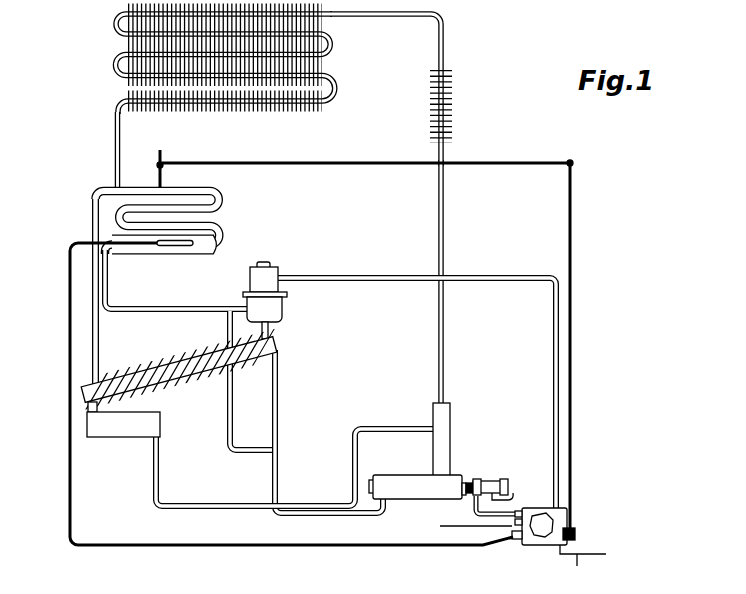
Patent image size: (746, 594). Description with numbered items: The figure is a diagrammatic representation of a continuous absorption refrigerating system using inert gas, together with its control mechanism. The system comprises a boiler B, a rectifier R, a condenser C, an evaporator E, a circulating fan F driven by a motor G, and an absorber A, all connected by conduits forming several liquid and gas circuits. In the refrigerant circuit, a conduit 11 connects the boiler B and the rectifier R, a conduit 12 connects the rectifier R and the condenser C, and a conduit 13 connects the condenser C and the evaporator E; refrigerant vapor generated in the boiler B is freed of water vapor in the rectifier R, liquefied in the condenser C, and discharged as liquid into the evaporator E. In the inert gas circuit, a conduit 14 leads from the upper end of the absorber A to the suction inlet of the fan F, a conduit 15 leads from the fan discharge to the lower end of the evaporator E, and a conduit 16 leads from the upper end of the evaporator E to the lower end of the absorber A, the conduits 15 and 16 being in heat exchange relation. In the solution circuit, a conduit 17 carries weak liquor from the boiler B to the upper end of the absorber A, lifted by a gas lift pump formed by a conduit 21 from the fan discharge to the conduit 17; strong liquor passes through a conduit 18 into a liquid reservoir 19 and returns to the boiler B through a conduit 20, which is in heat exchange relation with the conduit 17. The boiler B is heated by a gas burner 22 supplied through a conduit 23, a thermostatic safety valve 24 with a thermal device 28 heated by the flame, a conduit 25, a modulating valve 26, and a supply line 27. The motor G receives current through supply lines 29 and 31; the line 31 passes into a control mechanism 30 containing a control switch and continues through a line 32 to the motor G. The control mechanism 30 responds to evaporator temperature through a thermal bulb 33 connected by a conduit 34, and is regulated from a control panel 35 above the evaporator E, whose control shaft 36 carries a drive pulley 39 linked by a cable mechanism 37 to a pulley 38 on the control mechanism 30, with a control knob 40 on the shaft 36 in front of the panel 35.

The conduit 11 is at (445, 356).
The conduit 12 is at (443, 52).
The conduit 13 is at (113, 150).
The conduit 14 is at (269, 329).
The conduit 15 is at (104, 291).
The conduit 16 is at (91, 292).
The conduit 17 is at (333, 516).
The conduit 18 is at (88, 408).
The liquid reservoir 19 is at (120, 428).
The conduit 20 is at (195, 503).
The conduit 21 is at (226, 418).
The gas burner 22 is at (493, 482).
The conduit 23 is at (510, 496).
The safety valve 24 is at (472, 500).
The conduit 25 is at (508, 540).
The modulating valve 26 is at (540, 538).
The supply line 27 is at (452, 528).
The thermal device 28 is at (471, 481).
The supply line 29 is at (575, 420).
The control mechanism 30 is at (567, 512).
The supply line 31 is at (578, 566).
The line 32 is at (552, 420).
The thermal bulb 33 is at (176, 247).
The conduit 34 is at (105, 545).
The control panel 35 is at (162, 154).
The control shaft 36 is at (325, 162).
The cable mechanism 37 is at (573, 322).
The pulley 38 is at (577, 533).
The drive pulley 39 is at (575, 160).
The control knob 40 is at (157, 170).
The absorber A is at (180, 356).
The boiler B is at (404, 478).
The condenser C is at (331, 80).
The evaporator E is at (222, 233).
The circulating fan F is at (279, 313).
The motor G is at (256, 280).
The rectifier R is at (446, 108).